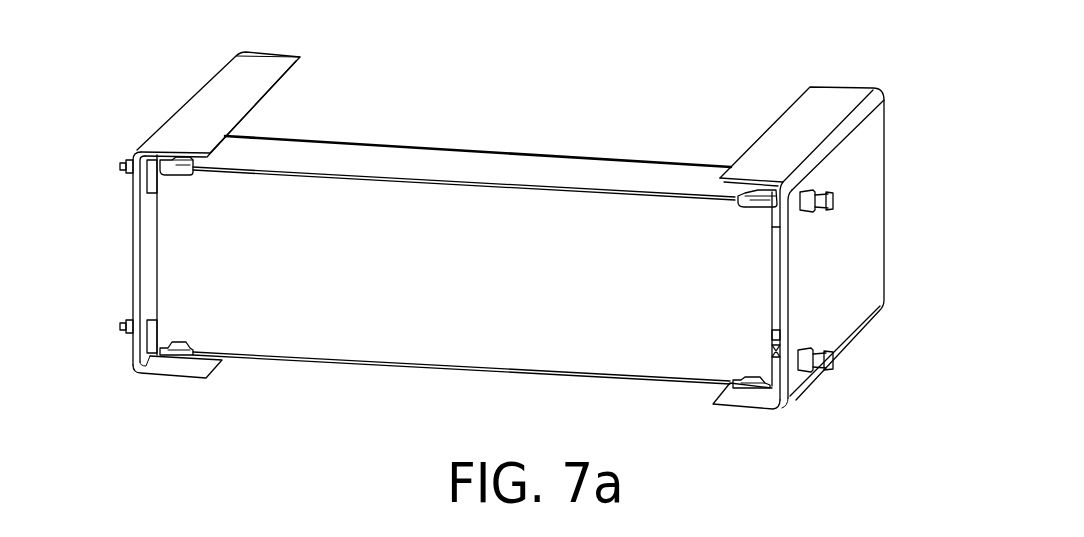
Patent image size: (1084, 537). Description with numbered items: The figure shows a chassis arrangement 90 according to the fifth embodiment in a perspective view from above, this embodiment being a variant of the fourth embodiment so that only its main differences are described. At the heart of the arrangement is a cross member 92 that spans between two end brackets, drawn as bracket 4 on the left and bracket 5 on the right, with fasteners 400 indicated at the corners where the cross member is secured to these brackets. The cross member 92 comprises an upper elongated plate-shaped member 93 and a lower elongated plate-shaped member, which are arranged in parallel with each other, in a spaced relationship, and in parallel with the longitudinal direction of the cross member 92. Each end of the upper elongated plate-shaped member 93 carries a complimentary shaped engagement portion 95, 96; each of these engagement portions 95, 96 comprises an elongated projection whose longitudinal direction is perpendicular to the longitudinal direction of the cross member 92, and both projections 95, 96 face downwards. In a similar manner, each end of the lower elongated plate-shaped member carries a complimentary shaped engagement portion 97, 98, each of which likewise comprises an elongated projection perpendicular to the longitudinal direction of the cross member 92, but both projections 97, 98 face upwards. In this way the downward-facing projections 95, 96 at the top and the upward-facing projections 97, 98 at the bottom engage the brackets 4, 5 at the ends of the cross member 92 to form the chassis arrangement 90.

The first mounting bracket 4 is at (226, 107).
The second mounting bracket 5 is at (800, 137).
The chassis arrangement 90 is at (412, 237).
The cross member 92 is at (375, 227).
The upper elongated plate-shaped member 93 is at (475, 174).
The complimentary shaped engagement portion 95 is at (757, 208).
The complimentary shaped engagement portion 96 is at (175, 175).
The complimentary shaped engagement portion 97 is at (165, 340).
The complimentary shaped engagement portion 98 is at (747, 378).
The fastener 400 is at (134, 207).